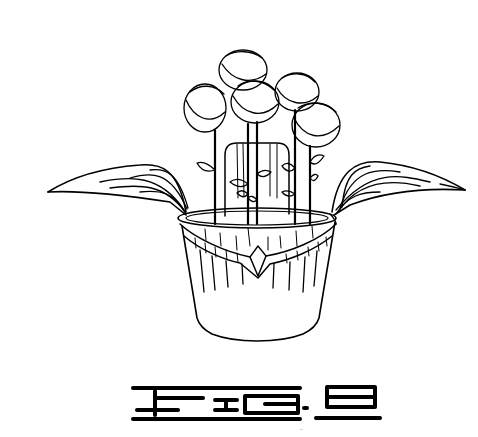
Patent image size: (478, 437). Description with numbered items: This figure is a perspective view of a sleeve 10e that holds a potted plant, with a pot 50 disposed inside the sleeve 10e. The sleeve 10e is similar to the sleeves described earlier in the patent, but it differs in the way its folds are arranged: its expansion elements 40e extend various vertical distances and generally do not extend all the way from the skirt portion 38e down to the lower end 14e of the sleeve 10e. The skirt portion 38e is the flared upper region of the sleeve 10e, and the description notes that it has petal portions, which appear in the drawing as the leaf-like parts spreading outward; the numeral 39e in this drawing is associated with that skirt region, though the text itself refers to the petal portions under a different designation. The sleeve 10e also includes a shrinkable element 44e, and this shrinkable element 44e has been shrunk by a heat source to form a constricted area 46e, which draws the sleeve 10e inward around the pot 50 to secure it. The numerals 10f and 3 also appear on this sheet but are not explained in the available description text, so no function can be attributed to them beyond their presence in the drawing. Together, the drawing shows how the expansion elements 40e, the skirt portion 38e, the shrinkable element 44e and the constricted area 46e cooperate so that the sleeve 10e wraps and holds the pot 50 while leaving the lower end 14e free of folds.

The sleeve 10e is at (366, 256).
The floral arrangement assembly 10f is at (460, 310).
The lower end 14e is at (307, 333).
The skirt portion 38e is at (388, 164).
The left leaf 39e is at (113, 168).
The expansion elements 40e is at (213, 264).
The shrinkable element 44e is at (340, 222).
The constricted area 46e is at (182, 227).
The pot 50 is at (318, 170).
The leaf tip 3 is at (432, 186).